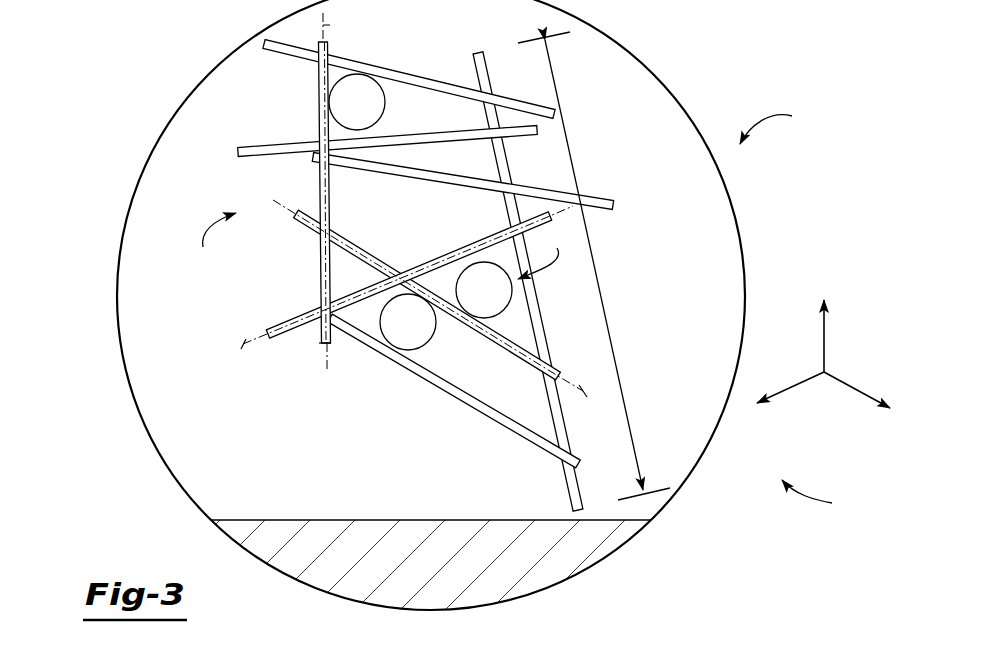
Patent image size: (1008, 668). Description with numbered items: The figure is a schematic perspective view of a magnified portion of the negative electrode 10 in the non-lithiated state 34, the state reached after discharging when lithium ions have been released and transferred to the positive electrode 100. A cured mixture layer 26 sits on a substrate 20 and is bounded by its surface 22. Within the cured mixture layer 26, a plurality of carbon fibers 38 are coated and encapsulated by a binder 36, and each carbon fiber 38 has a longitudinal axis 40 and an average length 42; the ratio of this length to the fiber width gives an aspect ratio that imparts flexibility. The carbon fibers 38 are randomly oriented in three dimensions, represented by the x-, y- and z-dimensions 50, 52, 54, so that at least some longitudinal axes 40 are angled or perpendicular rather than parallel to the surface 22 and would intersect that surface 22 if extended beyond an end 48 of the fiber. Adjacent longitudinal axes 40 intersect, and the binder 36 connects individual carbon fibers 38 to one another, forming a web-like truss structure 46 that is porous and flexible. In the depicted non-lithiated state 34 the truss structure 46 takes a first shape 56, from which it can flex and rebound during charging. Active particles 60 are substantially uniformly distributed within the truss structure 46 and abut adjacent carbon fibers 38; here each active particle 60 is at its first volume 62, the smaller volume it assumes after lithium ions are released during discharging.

The negative electrode 10 is at (461, 313).
The positive electrode 100 is at (170, 52).
The substrate 20 is at (276, 568).
The surface 22 is at (386, 521).
The cured mixture layer 26 is at (117, 305).
The non-lithiated state 34 is at (820, 499).
The binder 36 is at (297, 460).
The carbon fibers 38 is at (400, 72).
The longitudinal axis 40 is at (332, 25).
The average length 42 is at (594, 266).
The truss structure 46 is at (213, 244).
The end 48 is at (330, 343).
The x-dimension 50 is at (846, 386).
The y-dimension 52 is at (826, 336).
The z-dimension 54 is at (790, 388).
The first shape 56 is at (779, 125).
The active particles 60 is at (386, 105).
The first volume 62 is at (543, 252).